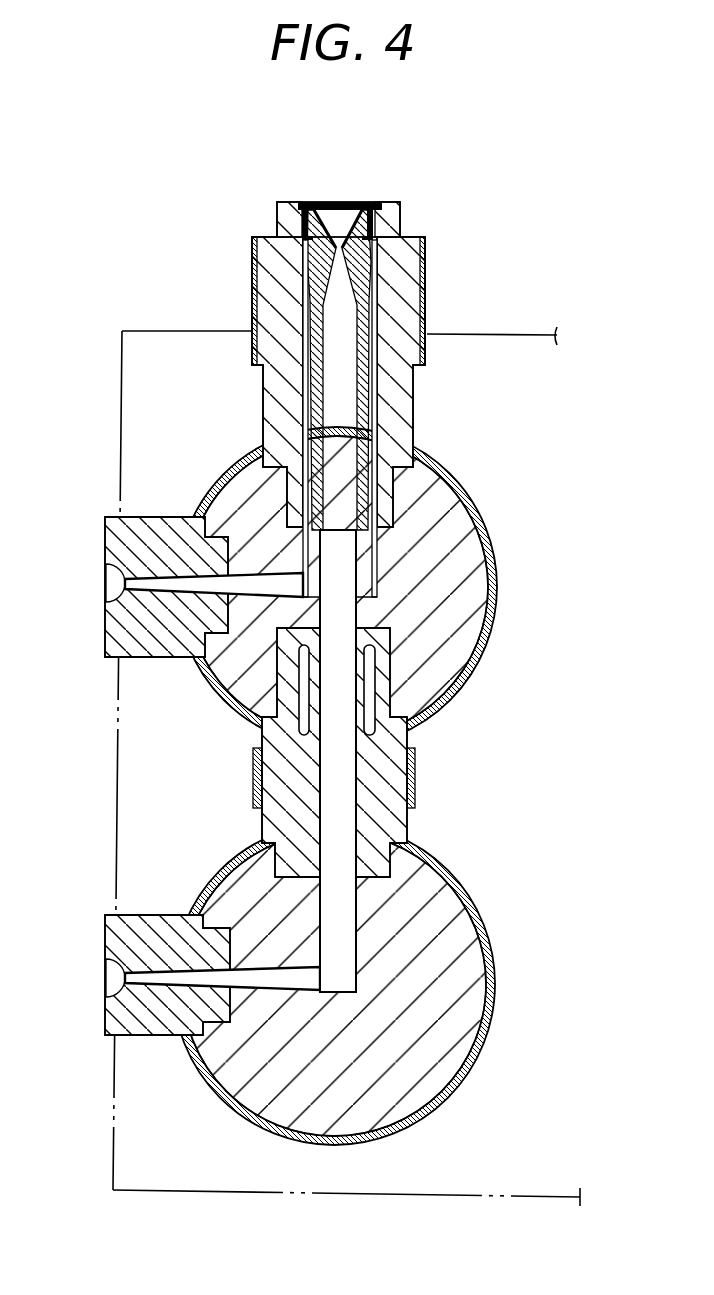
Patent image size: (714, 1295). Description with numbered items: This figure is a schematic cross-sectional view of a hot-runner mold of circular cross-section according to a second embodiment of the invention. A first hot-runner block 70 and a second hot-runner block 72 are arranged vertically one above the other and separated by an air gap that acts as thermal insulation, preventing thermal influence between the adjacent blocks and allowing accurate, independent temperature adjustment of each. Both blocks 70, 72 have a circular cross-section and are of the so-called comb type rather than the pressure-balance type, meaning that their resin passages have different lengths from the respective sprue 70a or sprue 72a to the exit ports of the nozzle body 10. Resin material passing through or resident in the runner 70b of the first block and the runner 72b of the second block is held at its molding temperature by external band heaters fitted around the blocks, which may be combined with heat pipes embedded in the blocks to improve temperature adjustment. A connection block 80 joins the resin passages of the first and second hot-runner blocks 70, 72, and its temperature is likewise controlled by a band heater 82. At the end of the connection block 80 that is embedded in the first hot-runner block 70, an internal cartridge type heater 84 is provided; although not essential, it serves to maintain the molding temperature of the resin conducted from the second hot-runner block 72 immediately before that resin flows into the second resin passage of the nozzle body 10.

The nozzle body 10 is at (397, 413).
The first hot-runner block 70 is at (452, 524).
The sprue 70a is at (107, 640).
The runner 70b is at (247, 588).
The second hot-runner block 72 is at (438, 928).
The sprue 72a is at (105, 1032).
The runner 72b is at (248, 985).
The connection block 80 is at (395, 738).
The band heater 82 is at (414, 794).
The internal cartridge type heater 84 is at (378, 673).